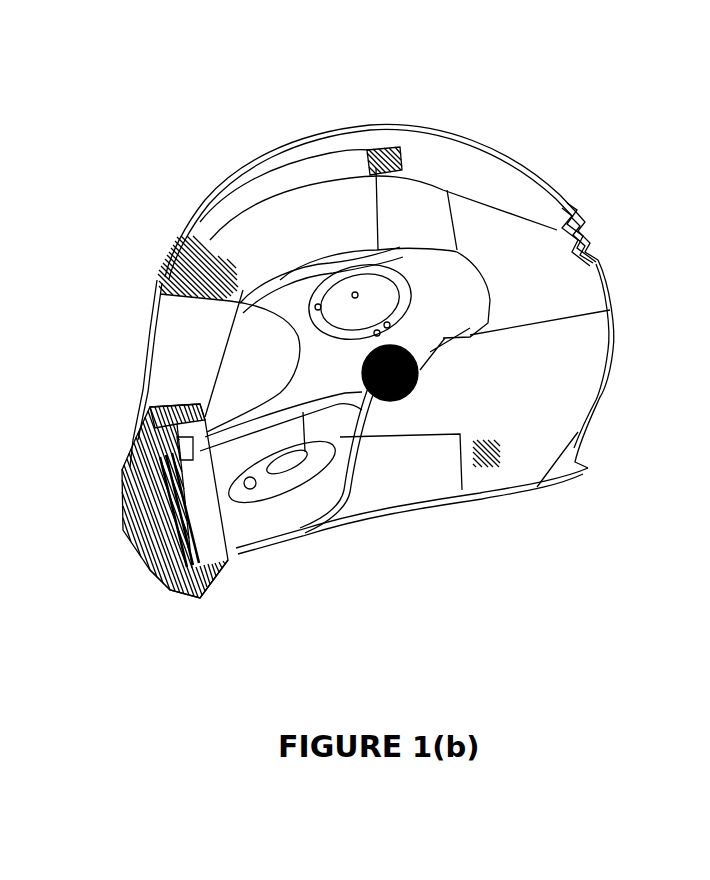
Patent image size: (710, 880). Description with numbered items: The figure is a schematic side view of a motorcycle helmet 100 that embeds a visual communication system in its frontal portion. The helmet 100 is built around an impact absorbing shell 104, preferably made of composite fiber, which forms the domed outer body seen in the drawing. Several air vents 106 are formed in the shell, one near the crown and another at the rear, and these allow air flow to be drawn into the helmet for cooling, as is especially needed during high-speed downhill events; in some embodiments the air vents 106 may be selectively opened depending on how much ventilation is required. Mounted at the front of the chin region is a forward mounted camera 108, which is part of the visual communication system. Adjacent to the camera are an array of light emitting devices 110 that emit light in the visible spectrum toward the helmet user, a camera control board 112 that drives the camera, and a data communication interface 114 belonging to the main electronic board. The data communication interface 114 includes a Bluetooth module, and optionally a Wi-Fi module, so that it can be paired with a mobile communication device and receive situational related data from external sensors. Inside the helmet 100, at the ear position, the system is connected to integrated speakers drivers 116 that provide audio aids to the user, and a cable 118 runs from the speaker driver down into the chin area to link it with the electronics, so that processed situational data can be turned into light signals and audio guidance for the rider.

The motorcycle helmet 100 is at (240, 136).
The impact absorbing shell 104 is at (512, 167).
The air vents 106 is at (395, 147).
The forward mounted camera 108 is at (143, 490).
The array of light emitting devices 110 is at (177, 428).
The camera control board 112 is at (170, 522).
The data communication interface 114 is at (170, 547).
The integrated speakers drivers 116 is at (415, 380).
The cable 118 is at (215, 503).